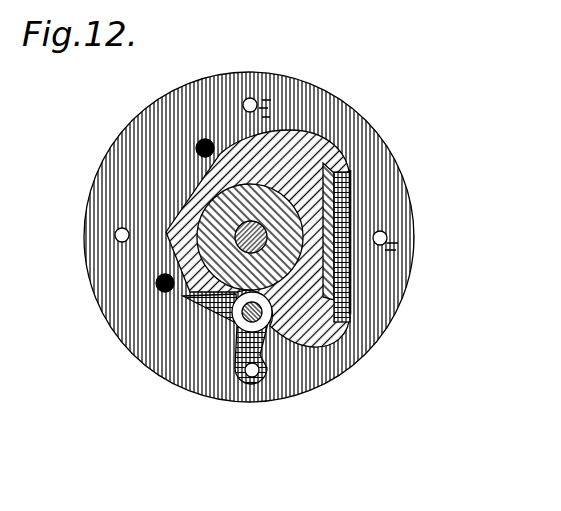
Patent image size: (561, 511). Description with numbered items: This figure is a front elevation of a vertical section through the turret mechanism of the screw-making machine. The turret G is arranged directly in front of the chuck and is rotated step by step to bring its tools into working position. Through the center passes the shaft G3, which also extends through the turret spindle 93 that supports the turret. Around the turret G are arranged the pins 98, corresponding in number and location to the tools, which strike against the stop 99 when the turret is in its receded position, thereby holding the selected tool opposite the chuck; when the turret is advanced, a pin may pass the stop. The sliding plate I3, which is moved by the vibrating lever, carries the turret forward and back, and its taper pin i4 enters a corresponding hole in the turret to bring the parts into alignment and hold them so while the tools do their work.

The turret G is at (382, 166).
The sliding plate I3 is at (352, 226).
The taper pin i4 is at (351, 191).
The shaft G3 is at (236, 238).
The pins 98 is at (123, 228).
The turret spindle 93 is at (224, 273).
The stop 99 is at (233, 373).